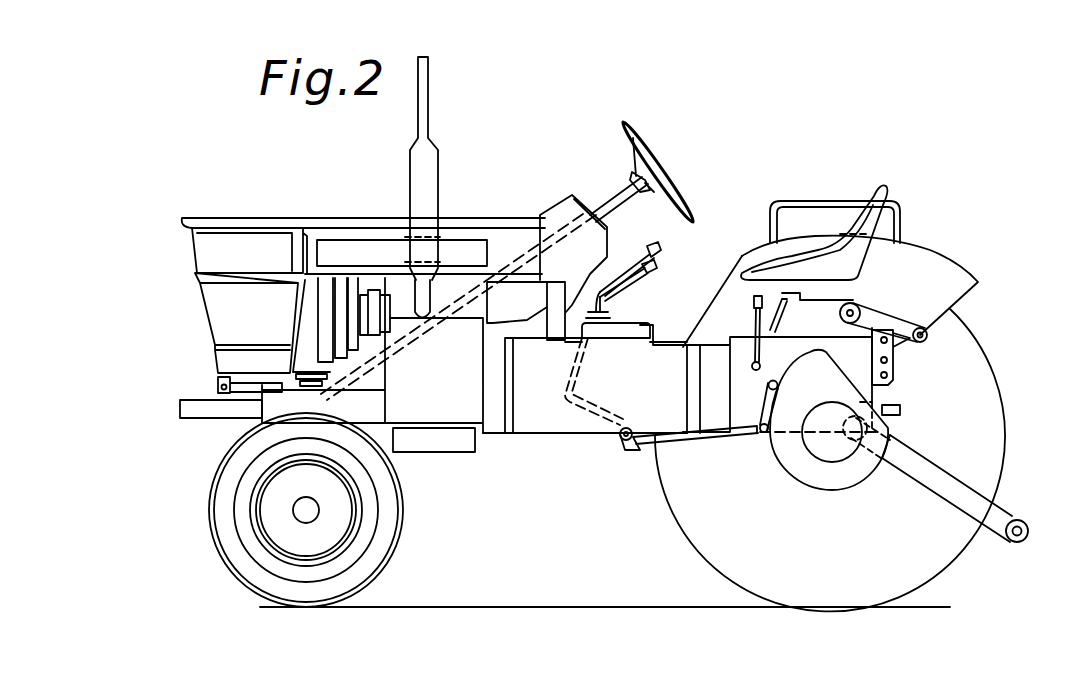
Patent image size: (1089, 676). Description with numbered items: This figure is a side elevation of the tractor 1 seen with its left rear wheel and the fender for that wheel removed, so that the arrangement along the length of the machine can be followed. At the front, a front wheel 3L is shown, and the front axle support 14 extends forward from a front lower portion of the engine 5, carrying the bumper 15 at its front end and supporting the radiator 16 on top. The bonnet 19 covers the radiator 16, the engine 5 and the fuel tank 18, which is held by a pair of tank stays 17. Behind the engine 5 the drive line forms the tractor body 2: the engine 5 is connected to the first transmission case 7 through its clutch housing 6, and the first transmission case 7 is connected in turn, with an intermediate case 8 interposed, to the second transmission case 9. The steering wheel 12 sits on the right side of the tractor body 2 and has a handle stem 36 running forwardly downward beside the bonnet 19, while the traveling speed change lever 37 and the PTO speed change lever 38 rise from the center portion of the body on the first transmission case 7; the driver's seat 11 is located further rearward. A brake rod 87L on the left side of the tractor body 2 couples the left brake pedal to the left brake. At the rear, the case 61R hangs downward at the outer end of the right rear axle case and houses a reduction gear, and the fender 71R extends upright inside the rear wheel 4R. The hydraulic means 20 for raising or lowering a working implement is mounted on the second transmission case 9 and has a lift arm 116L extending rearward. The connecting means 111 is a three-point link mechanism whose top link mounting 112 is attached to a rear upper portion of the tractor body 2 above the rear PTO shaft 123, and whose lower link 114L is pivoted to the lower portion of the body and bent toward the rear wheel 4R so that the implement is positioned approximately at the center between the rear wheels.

The tractor 1 is at (523, 159).
The tractor body 2 is at (594, 443).
The front wheel 3L is at (402, 522).
The rear wheel 4R is at (993, 402).
The engine 5 is at (450, 410).
The clutch housing 6 is at (496, 422).
The first transmission case 7 is at (548, 422).
The intermediate case 8 is at (718, 420).
The second transmission case 9 is at (742, 412).
The driver's seat 11 is at (888, 205).
The steering wheel 12 is at (688, 184).
The front axle support 14 is at (278, 407).
The bumper 15 is at (195, 410).
The radiator 16 is at (317, 327).
The tank stay 17 is at (556, 340).
The fuel tank 18 is at (510, 307).
The bonnet 19 is at (333, 216).
The hydraulic means 20 is at (862, 292).
The handle stem 36 is at (608, 196).
The traveling speed change lever 37 is at (662, 252).
The PTO speed change lever 38 is at (640, 282).
The case 61R is at (805, 494).
The fender 71R is at (930, 260).
The brake rod 87L is at (655, 440).
The connecting means 111 is at (901, 484).
The top link mounting 112 is at (898, 366).
The lower link 114L is at (948, 490).
The lift arm 116L is at (893, 322).
The rear PTO shaft 123 is at (902, 412).